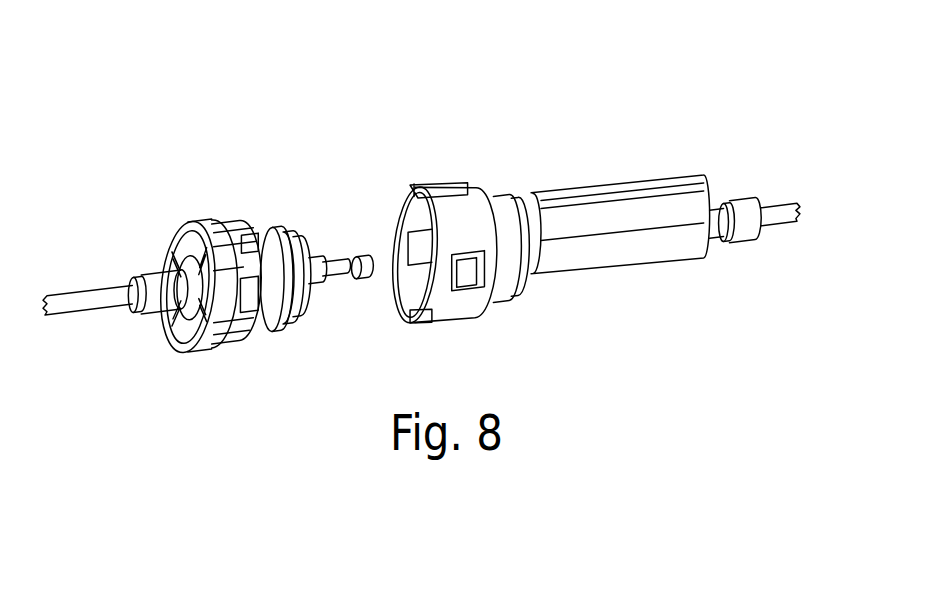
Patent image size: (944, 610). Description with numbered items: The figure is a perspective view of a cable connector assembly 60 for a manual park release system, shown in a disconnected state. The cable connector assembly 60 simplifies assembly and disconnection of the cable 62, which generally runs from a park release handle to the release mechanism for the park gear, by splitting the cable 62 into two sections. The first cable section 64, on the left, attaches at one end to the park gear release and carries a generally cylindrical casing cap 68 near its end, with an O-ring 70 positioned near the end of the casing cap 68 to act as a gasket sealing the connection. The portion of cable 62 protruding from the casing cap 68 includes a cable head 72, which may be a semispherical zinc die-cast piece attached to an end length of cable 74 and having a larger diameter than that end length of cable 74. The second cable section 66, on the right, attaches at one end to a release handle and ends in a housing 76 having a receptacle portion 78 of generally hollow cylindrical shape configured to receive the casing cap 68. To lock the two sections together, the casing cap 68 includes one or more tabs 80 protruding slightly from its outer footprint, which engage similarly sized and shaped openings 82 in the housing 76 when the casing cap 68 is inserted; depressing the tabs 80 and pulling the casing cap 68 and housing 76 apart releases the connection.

The cable connector assembly 60 is at (342, 95).
The cable 62 is at (108, 304).
The first cable section 64 is at (208, 195).
The second cable section 66 is at (480, 120).
The casing cap 68 is at (213, 339).
The O-ring 70 is at (273, 230).
The cable head 72 is at (372, 274).
The end length of cable 74 is at (340, 258).
The housing 76 is at (602, 257).
The receptacle portion 78 is at (477, 309).
The tabs 80 is at (262, 303).
The openings 82 is at (471, 278).